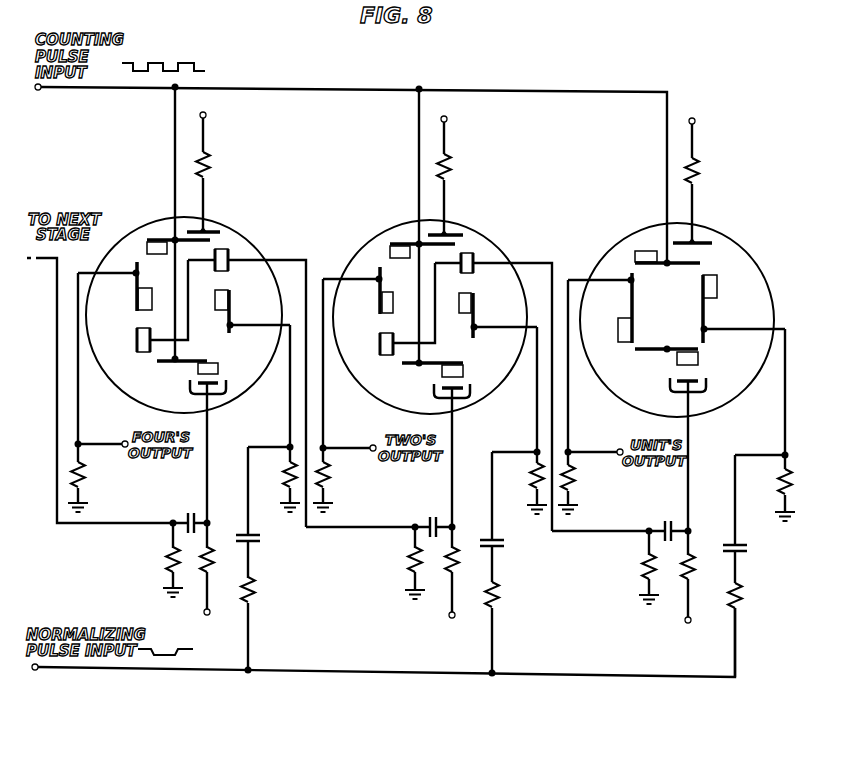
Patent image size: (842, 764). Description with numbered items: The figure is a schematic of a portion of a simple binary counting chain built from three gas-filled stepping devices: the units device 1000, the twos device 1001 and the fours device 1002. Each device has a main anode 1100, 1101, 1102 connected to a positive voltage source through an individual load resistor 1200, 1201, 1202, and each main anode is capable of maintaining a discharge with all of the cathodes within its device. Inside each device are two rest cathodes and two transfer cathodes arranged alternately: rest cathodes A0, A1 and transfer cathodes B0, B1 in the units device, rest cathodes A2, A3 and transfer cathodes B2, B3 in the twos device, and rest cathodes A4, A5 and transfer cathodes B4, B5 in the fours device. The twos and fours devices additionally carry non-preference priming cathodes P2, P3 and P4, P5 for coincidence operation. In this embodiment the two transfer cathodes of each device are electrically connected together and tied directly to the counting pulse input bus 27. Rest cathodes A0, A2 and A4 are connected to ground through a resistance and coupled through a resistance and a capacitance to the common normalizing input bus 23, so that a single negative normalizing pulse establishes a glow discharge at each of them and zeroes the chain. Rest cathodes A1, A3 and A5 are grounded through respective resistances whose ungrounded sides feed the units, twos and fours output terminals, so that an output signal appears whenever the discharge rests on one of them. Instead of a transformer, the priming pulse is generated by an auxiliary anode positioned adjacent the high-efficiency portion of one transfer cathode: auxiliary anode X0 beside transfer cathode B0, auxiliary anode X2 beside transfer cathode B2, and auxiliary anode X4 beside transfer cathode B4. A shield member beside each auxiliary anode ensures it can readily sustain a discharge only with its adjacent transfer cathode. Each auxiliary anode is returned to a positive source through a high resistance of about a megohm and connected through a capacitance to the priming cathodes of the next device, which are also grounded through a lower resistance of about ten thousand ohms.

The counting pulse input bus 27 is at (513, 90).
The normalizing input bus 23 is at (578, 678).
The units device 1000 is at (753, 285).
The twos device 1001 is at (495, 253).
The fours device 1002 is at (240, 245).
The main anode 1100 is at (700, 245).
The main anode 1101 is at (457, 233).
The main anode 1102 is at (220, 230).
The load resistor 1200 is at (702, 170).
The load resistor 1201 is at (452, 172).
The load resistor 1202 is at (212, 159).
The transfer cathode B5 is at (157, 240).
The transfer cathode B4 is at (207, 357).
The transfer cathode B3 is at (400, 242).
The transfer cathode B2 is at (468, 363).
The transfer cathode B1 is at (647, 250).
The transfer cathode B0 is at (700, 357).
The rest cathode A5 is at (137, 297).
The rest cathode A4 is at (233, 308).
The rest cathode A3 is at (380, 298).
The rest cathode A2 is at (480, 310).
The rest cathode A1 is at (620, 328).
The rest cathode A0 is at (718, 292).
The priming cathode P5 is at (230, 263).
The priming cathode P4 is at (137, 345).
The priming cathode P3 is at (478, 270).
The priming cathode P2 is at (380, 345).
The auxiliary anode X4 is at (220, 380).
The auxiliary anode X2 is at (465, 385).
The auxiliary anode X0 is at (700, 377).